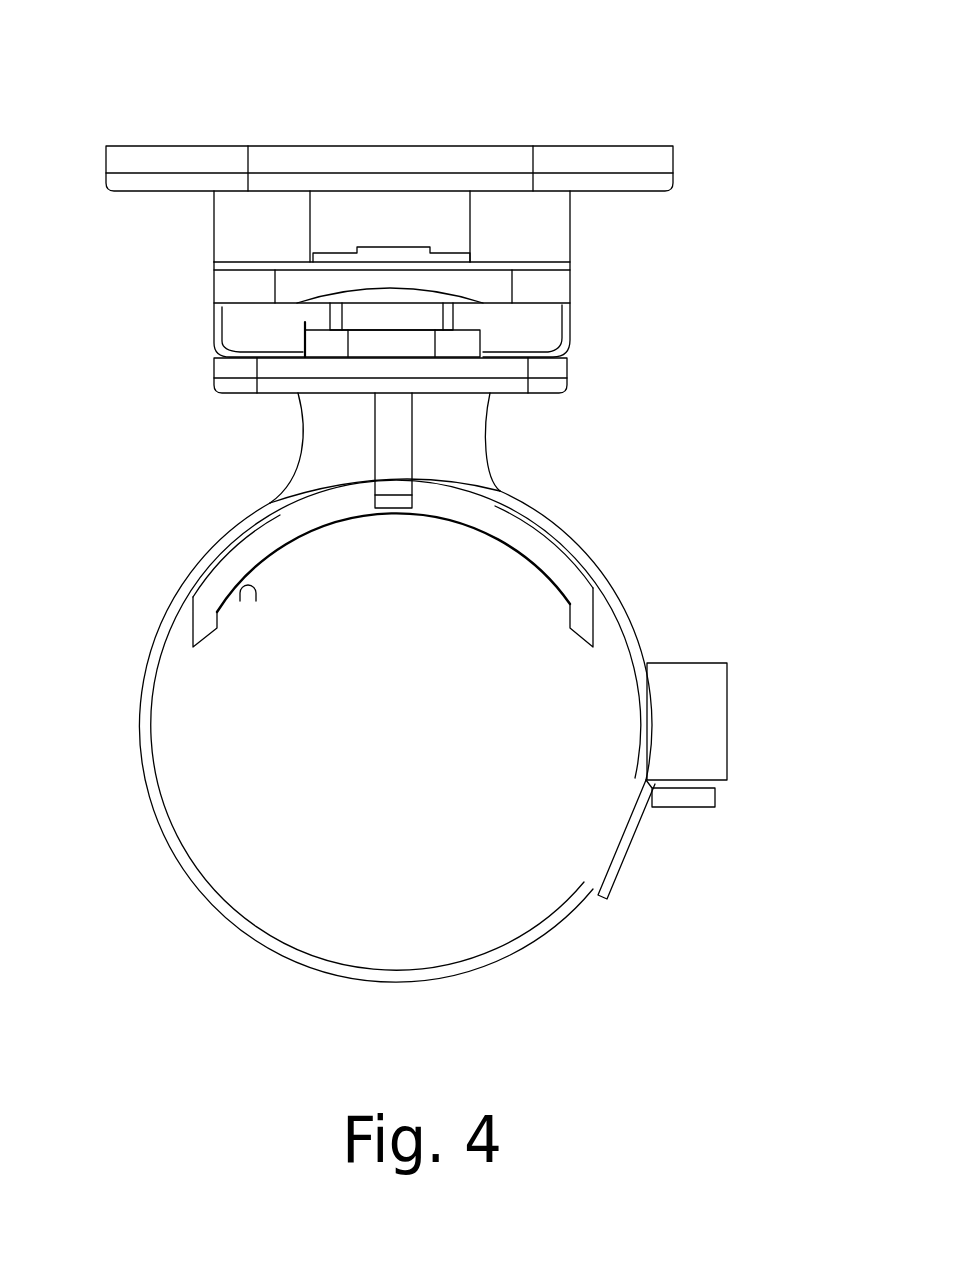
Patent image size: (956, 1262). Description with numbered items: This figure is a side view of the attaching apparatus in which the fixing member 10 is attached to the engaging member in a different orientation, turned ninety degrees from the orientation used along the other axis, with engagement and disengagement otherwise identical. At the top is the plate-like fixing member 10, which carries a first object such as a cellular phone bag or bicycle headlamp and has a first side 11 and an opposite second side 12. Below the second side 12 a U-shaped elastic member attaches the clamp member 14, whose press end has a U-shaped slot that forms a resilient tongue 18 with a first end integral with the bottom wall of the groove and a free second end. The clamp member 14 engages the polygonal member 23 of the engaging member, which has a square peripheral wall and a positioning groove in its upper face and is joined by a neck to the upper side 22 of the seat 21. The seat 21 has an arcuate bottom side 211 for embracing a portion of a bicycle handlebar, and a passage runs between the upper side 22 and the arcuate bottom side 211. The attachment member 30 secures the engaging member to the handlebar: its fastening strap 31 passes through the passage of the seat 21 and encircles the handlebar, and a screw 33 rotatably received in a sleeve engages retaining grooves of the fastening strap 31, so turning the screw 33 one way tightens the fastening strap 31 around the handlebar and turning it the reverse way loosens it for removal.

The fixing member 10 is at (533, 108).
The first side 11 is at (641, 146).
The second side 12 is at (617, 191).
The clamp member 14 is at (570, 283).
The resilient tongue 18 is at (363, 323).
The polygonal member 23 is at (558, 317).
The upper side 22 is at (568, 365).
The seat 21 is at (523, 441).
The arcuate bottom side 211 is at (247, 602).
The fastening strap 31 is at (603, 573).
The attachment member 30 is at (695, 627).
The screw 33 is at (700, 797).